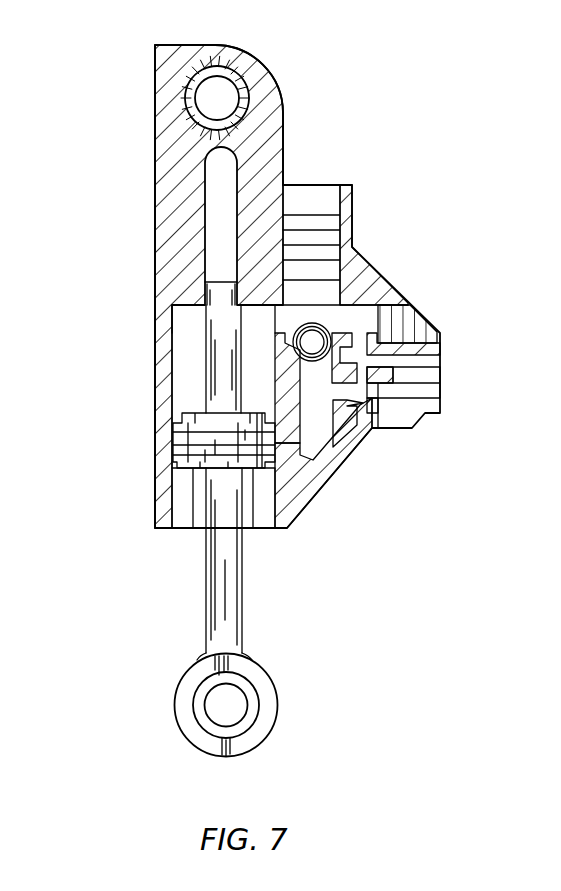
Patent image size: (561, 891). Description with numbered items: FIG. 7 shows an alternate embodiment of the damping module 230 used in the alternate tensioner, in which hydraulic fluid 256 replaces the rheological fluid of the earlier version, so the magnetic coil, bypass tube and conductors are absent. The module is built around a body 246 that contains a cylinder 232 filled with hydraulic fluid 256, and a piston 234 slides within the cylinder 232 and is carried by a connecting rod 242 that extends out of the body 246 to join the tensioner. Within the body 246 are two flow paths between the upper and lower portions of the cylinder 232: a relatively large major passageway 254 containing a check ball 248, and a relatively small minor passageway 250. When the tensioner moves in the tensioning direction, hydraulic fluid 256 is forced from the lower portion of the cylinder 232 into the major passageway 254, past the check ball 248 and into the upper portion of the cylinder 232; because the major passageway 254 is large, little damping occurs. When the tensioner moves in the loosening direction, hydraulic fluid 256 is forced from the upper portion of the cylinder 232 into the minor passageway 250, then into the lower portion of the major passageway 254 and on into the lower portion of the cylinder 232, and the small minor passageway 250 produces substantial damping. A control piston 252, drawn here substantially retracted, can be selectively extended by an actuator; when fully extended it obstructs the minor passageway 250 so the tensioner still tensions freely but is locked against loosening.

The damping module 230 is at (408, 82).
The body 246 is at (153, 172).
The hydraulic fluid 256 is at (183, 327).
The cylinder 232 is at (180, 397).
The piston 234 is at (173, 443).
The connecting rod 242 is at (217, 603).
The check ball 248 is at (328, 330).
The minor passageway 250 is at (360, 360).
The control piston 252 is at (378, 398).
The major passageway 254 is at (325, 433).